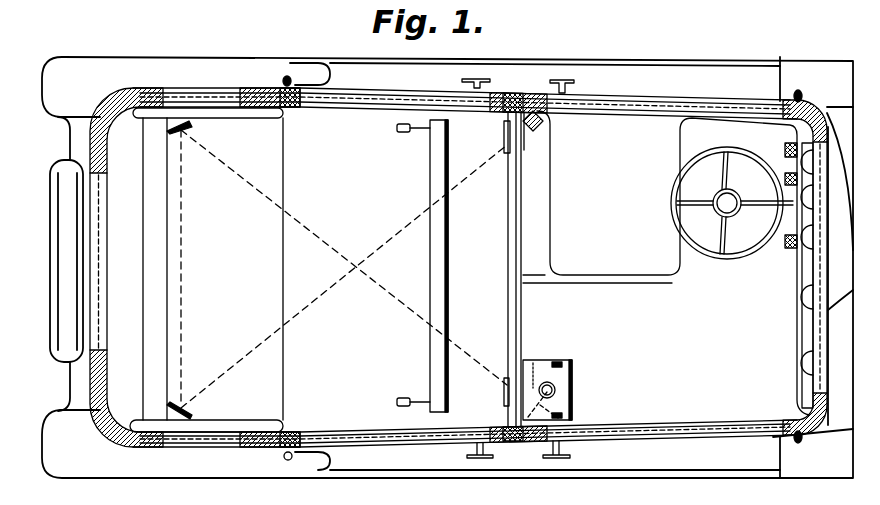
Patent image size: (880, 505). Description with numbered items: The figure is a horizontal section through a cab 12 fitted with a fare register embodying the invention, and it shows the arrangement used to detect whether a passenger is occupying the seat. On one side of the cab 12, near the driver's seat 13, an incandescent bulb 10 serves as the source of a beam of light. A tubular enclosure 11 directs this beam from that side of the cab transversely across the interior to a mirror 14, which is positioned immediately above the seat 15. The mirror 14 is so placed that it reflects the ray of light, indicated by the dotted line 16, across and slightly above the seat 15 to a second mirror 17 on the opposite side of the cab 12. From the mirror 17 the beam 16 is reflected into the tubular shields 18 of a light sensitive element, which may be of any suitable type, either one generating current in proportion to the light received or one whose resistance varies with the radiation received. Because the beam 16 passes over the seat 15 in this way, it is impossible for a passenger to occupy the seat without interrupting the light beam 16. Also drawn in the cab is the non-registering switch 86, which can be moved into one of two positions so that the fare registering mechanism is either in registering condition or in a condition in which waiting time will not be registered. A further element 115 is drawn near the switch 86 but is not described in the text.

The incandescent bulb 10 is at (525, 137).
The tubular enclosure 11 is at (504, 137).
The cab 12 is at (580, 93).
The driver's seat 13 is at (666, 263).
The mirror 14 is at (192, 414).
The seat 15 is at (206, 270).
The light beam 16 is at (209, 388).
The mirror 17 is at (190, 124).
The tubular shields 18 is at (504, 388).
The control box 115 is at (565, 360).
The non-registering switch 86 is at (572, 410).